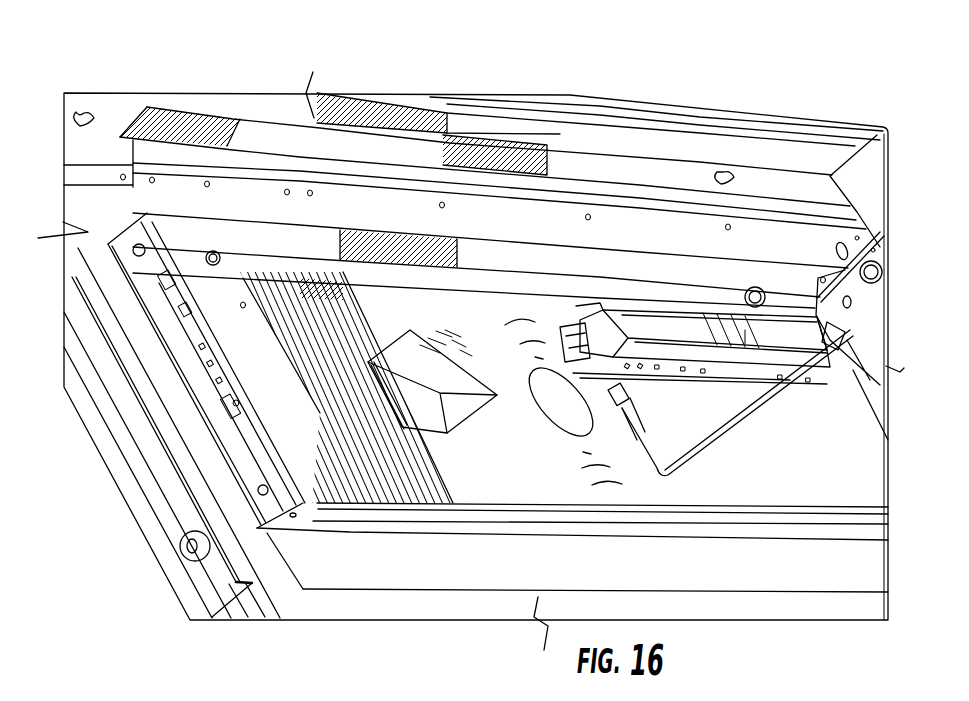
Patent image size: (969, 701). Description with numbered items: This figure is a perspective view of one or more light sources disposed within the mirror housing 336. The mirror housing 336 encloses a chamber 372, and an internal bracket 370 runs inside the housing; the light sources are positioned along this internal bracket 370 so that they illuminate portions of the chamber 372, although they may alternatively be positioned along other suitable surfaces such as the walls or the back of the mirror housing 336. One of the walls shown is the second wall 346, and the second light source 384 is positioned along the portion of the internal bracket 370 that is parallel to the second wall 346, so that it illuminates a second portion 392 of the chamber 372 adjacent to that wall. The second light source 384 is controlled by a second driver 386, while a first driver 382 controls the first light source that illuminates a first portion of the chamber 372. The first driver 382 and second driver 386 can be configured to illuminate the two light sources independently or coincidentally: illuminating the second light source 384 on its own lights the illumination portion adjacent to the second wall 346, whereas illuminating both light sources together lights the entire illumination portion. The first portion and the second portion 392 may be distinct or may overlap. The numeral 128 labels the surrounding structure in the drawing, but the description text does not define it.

The door panel 128 is at (122, 94).
The mirror housing 336 is at (780, 160).
The internal bracket 370 is at (557, 226).
The chamber 372 is at (493, 570).
The second wall 346 is at (203, 470).
The second light source 384 is at (217, 375).
The second driver 386 is at (463, 410).
The first driver 382 is at (690, 337).
The second portion 392 is at (144, 340).